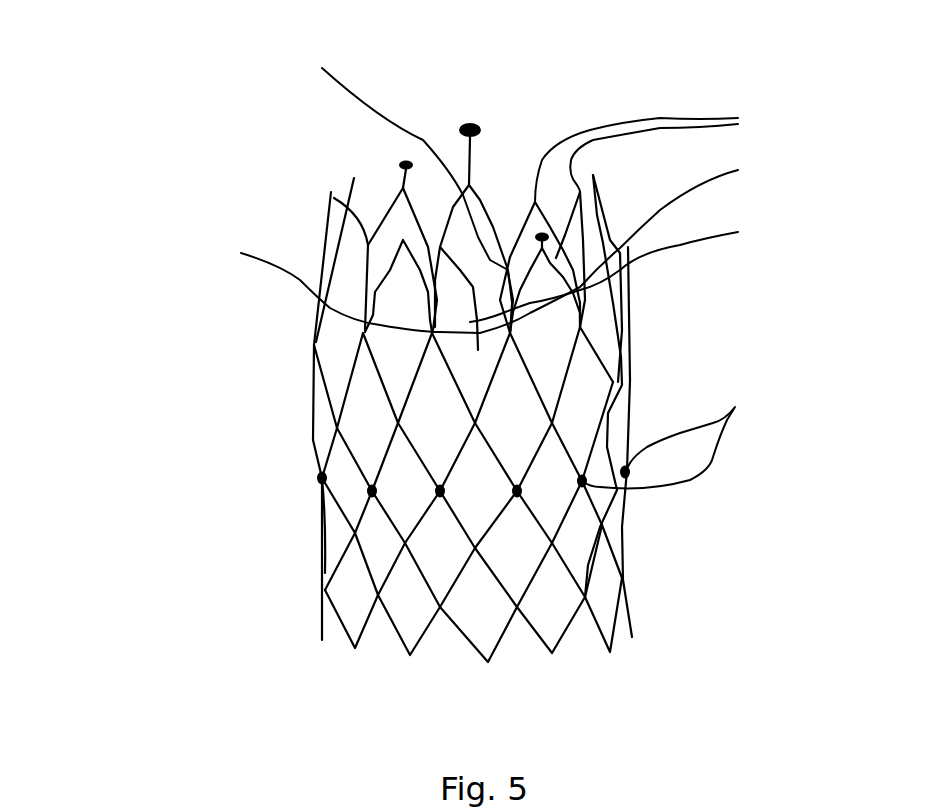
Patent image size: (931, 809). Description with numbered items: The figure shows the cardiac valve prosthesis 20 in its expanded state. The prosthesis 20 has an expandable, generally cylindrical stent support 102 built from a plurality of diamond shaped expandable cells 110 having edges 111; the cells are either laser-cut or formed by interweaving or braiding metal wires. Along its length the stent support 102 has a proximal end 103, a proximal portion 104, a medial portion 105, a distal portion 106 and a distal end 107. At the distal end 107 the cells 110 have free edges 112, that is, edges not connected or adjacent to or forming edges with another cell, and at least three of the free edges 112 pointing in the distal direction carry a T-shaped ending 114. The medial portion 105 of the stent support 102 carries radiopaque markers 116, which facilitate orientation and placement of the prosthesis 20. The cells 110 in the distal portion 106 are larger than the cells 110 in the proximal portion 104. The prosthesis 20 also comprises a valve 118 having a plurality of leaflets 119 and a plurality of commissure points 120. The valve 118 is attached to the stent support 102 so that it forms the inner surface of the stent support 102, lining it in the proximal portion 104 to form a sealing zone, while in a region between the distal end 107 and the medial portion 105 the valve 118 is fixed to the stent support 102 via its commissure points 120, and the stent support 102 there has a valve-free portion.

The cardiac valve prosthesis 20 is at (125, 288).
The stent support 102 is at (615, 580).
The proximal end 103 is at (665, 616).
The proximal portion 104 is at (305, 472).
The medial portion 105 is at (305, 395).
The distal portion 106 is at (303, 197).
The distal end 107 is at (308, 165).
The diamond shaped expandable cells 110 is at (357, 400).
The edges 111 is at (400, 188).
The free edges 112 is at (655, 152).
The T-shaped ending 114 is at (478, 128).
The radiopaque markers 116 is at (738, 404).
The valve 118 is at (606, 312).
The leaflets 119 is at (738, 300).
The commissure points 120 is at (325, 290).